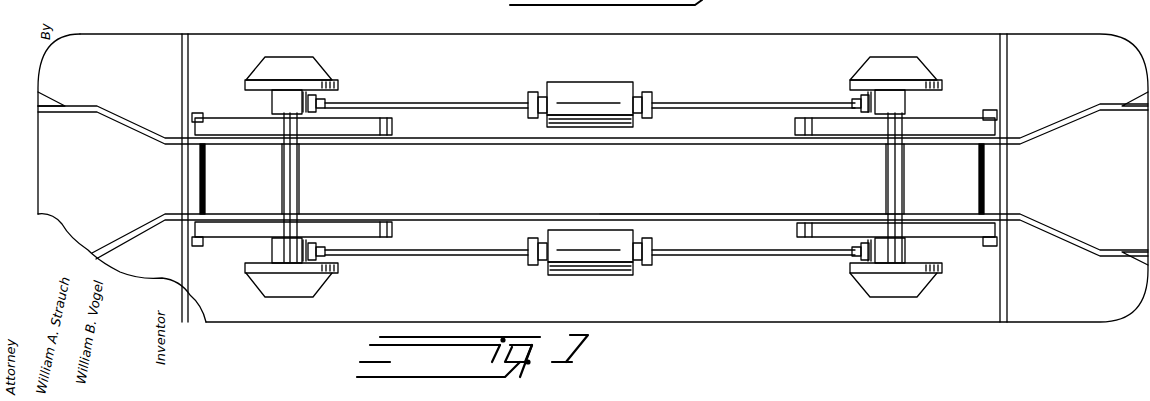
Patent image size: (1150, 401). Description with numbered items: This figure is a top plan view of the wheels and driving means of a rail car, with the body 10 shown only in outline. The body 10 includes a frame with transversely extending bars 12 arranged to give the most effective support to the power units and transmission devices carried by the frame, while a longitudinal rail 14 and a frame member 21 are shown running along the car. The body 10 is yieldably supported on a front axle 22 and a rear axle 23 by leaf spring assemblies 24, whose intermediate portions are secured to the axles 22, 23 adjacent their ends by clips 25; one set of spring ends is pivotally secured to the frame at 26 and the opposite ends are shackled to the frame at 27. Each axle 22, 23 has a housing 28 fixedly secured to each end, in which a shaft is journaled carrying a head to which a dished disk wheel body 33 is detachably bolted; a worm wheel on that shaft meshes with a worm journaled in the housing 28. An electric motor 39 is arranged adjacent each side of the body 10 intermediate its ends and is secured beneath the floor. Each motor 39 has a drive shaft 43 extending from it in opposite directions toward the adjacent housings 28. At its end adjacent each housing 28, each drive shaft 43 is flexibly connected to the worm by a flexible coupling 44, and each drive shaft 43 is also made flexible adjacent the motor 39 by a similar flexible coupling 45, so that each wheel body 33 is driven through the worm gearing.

The body construction 10 is at (1050, 47).
The transversely extending bars 12 is at (187, 100).
The frame rail 14 is at (884, 34).
The frame member 21 is at (715, 214).
The front axle 22 is at (903, 162).
The rear axle 23 is at (300, 186).
The leaf spring assemblies 24 is at (258, 124).
The clips 25 is at (300, 134).
The pivotal connection 26 is at (206, 190).
The shackle connection 27 is at (385, 131).
The housing 28 is at (272, 101).
The dished disk wheel body 33 is at (315, 72).
The electric motor 39 is at (606, 82).
The drive shaft 43 is at (432, 97).
The flexible coupling 44 is at (322, 101).
The flexible coupling 45 is at (536, 92).